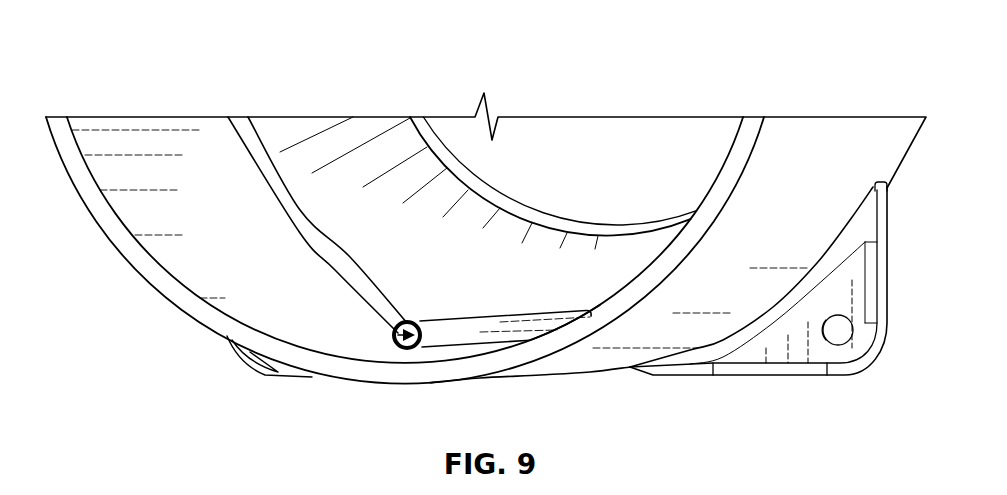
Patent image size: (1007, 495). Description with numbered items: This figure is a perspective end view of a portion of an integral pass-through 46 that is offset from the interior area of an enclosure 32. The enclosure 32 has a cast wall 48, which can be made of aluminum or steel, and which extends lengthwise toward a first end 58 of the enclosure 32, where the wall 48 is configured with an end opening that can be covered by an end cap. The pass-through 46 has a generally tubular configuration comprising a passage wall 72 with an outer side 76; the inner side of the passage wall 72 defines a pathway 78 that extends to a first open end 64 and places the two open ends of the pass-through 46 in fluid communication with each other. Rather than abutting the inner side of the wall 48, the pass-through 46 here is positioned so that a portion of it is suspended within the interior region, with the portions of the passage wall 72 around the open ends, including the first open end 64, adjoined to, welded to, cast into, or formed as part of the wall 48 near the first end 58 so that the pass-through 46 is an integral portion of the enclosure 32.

The enclosure 32 is at (873, 130).
The wall 48 is at (147, 272).
The first end 58 is at (533, 220).
The first open end 64 is at (577, 313).
The passage wall 72 is at (413, 317).
The outer side 76 is at (453, 327).
The pathway 78 is at (393, 337).
The pass-through 46 is at (423, 345).